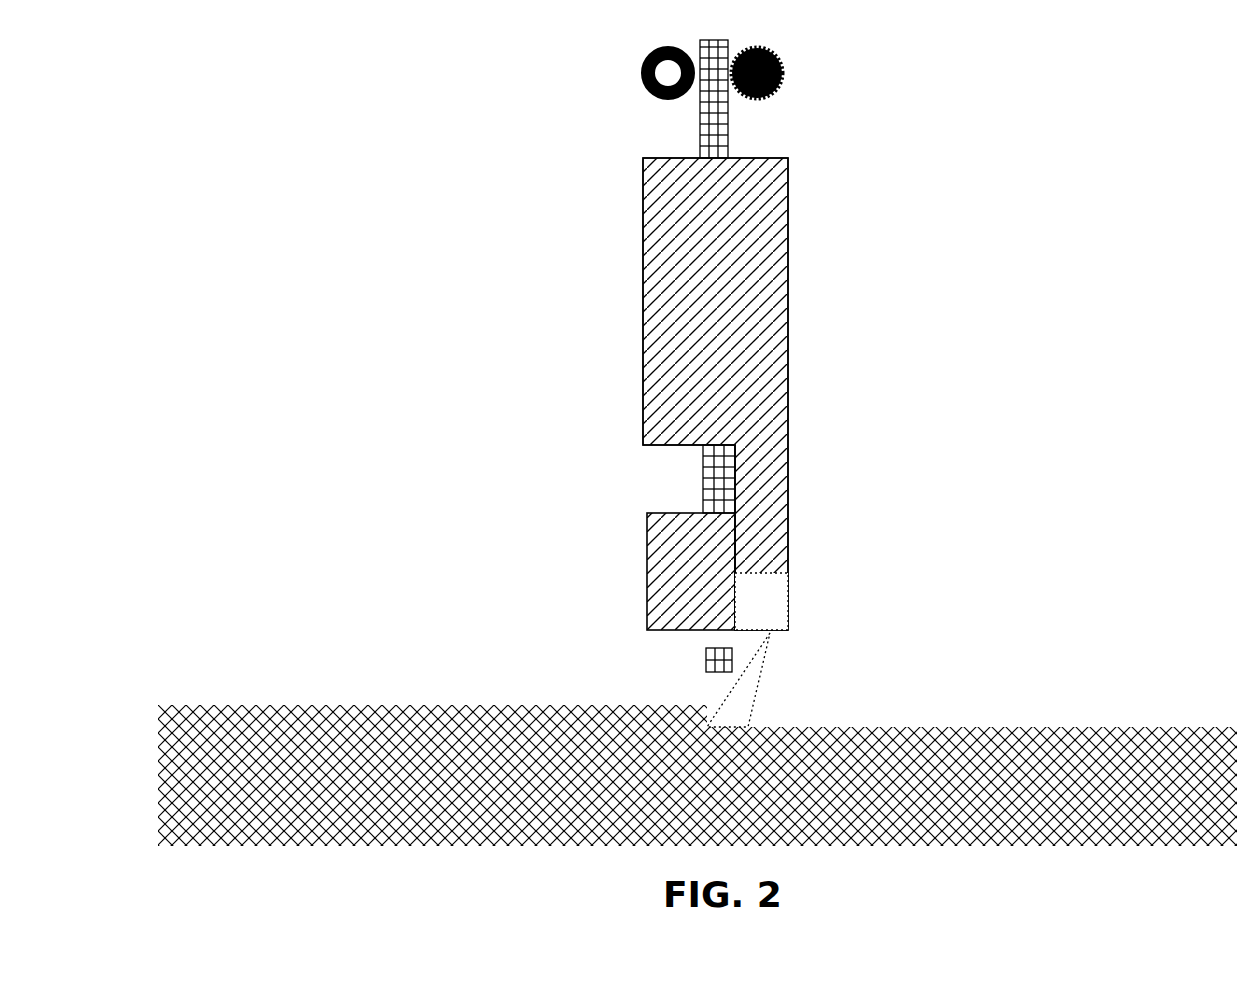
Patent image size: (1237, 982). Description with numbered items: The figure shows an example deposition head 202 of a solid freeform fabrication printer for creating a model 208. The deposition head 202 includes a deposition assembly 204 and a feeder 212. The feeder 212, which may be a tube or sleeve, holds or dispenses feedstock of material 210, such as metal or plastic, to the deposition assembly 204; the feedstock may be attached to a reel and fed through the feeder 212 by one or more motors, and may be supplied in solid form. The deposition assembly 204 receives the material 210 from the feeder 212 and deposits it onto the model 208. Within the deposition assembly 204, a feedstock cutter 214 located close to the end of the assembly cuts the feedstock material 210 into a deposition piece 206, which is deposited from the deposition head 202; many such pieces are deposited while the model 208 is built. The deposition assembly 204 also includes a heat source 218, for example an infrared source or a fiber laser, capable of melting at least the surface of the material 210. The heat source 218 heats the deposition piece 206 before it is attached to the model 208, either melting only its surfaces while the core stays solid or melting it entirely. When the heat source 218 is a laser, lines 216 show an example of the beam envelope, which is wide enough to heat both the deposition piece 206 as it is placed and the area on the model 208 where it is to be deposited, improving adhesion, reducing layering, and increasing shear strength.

The deposition head 202 is at (845, 386).
The deposition assembly 204 is at (570, 527).
The deposition piece 206 is at (704, 658).
The model 208 is at (837, 712).
The material 210 is at (685, 143).
The feeder 212 is at (783, 63).
The feedstock cutter 214 is at (703, 488).
The lines 216 is at (738, 680).
The heat source 218 is at (761, 601).